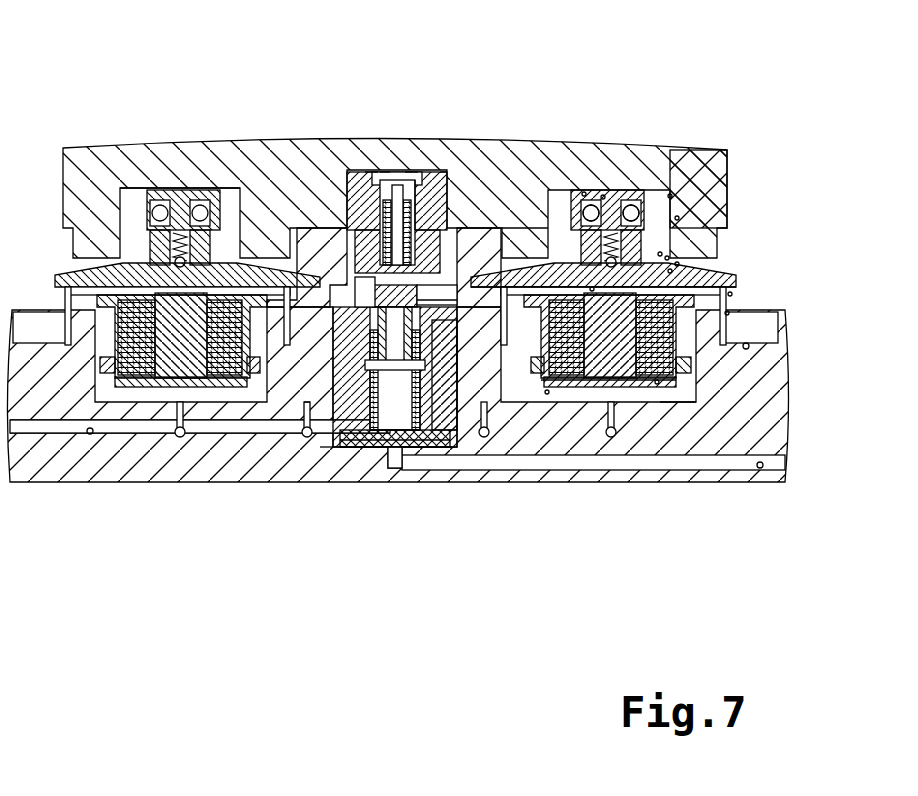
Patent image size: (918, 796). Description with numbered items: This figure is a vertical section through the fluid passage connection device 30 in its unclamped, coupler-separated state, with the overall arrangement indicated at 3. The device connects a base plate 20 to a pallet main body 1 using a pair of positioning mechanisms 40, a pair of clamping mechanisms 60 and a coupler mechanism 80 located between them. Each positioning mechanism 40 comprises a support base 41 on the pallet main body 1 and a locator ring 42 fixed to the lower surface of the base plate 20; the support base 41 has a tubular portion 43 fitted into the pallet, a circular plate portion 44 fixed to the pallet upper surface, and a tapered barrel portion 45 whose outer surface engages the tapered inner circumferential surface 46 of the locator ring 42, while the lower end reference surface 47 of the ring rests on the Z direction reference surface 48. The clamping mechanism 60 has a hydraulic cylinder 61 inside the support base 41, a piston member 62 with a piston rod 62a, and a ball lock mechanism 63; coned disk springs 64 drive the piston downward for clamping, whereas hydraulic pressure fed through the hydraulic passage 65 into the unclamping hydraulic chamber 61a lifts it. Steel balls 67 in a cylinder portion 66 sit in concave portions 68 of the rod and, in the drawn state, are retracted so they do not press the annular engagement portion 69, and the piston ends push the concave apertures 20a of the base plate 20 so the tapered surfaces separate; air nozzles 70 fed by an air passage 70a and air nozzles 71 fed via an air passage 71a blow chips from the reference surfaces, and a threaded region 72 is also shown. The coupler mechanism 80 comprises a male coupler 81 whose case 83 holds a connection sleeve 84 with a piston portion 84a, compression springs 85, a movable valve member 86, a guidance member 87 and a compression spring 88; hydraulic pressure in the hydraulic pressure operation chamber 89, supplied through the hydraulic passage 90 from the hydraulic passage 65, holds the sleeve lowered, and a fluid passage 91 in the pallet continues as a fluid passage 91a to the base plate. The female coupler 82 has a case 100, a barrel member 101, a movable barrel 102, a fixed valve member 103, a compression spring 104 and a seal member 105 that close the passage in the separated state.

The pallet main body 1 is at (40, 483).
The clamping device 3 is at (522, 105).
The base plate 20 is at (92, 160).
The concave aperture 20a is at (127, 187).
The fluid passage connection device 30 is at (235, 588).
The positioning mechanism 40 is at (146, 402).
The support base 41 is at (718, 266).
The locator ring 42 is at (660, 253).
The tubular portion 43 is at (728, 313).
The circular plate portion 44 is at (730, 293).
The tapered barrel portion 45 is at (667, 257).
The tapered inner circumferential surface 46 is at (677, 217).
The lower end reference surface 47 is at (670, 270).
The Z direction reference surface 48 is at (677, 263).
The clamping mechanism 60 is at (628, 407).
The hydraulic cylinder 61 is at (565, 397).
The unclamping hydraulic chamber 61a is at (547, 393).
The piston member 62 is at (657, 383).
The piston rod 62a is at (603, 195).
The ball lock mechanism 63 is at (648, 195).
The coned disk spring 64 is at (682, 412).
The hydraulic passage 65 is at (90, 432).
The cylinder portion 66 is at (583, 192).
The steel ball 67 is at (590, 192).
The concave portion 68 is at (607, 195).
The annular engagement portion 69 is at (670, 195).
The air nozzle 70 is at (527, 240).
The air passage 70a is at (479, 355).
The air nozzle 71 is at (527, 165).
The air passage 71a is at (750, 348).
The threaded portion 72 is at (592, 290).
The coupler mechanism 80 is at (338, 458).
The male coupler 81 is at (428, 447).
The female coupler 82 is at (420, 175).
The case 83 is at (322, 455).
The connection sleeve 84 is at (357, 318).
The piston portion 84a is at (447, 453).
The compression spring 85 is at (410, 447).
The movable valve member 86 is at (390, 445).
The guidance member 87 is at (380, 450).
The compression spring 88 is at (360, 307).
The hydraulic pressure operation chamber 89 is at (435, 365).
The hydraulic passage 90 is at (305, 405).
The fluid passage 91 is at (760, 465).
The fluid passage 91a is at (412, 172).
The case 100 is at (369, 222).
The barrel member 101 is at (444, 180).
The movable barrel 102 is at (422, 290).
The fixed valve member 103 is at (383, 172).
The compression spring 104 is at (371, 172).
The seal member 105 is at (425, 300).